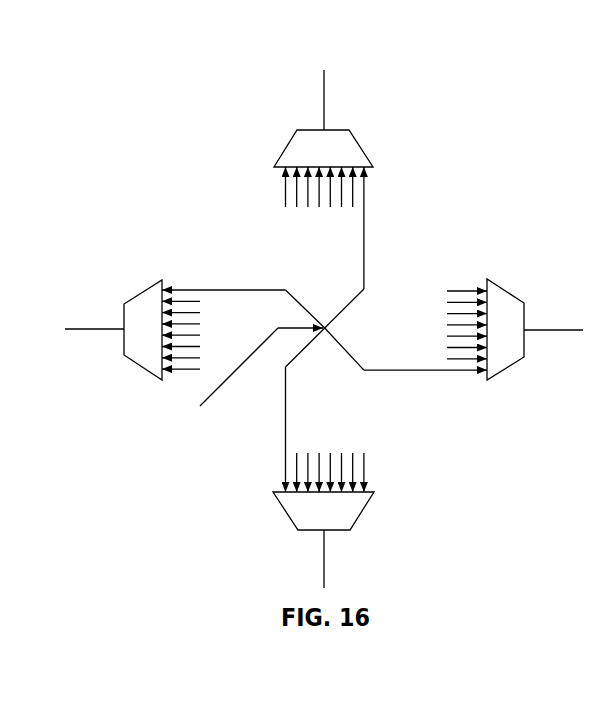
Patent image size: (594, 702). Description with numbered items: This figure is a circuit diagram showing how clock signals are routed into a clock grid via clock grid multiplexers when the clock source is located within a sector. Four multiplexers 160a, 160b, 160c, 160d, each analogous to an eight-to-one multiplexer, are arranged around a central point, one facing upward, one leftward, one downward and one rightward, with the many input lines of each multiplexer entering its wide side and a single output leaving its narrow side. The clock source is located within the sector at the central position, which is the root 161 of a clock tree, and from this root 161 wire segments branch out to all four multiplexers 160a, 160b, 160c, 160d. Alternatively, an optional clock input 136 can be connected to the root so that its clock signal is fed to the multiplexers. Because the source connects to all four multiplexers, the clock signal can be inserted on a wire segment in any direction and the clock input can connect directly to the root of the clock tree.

The multiplexer 160a is at (362, 150).
The multiplexer 160b is at (144, 289).
The multiplexer 160c is at (364, 514).
The multiplexer 160d is at (505, 288).
The root of a clock tree 161 is at (329, 327).
The optional clock input 136 is at (153, 463).